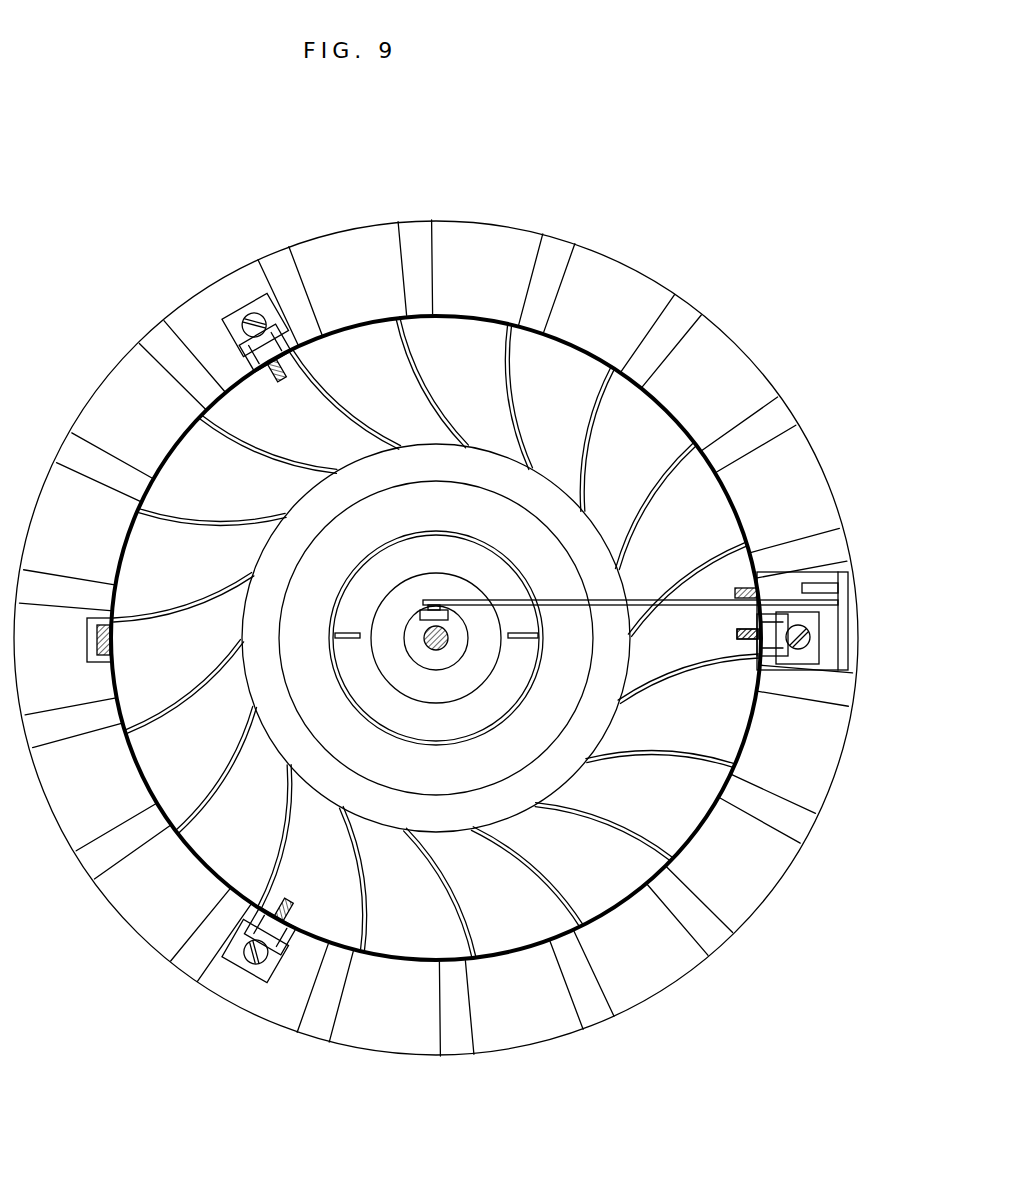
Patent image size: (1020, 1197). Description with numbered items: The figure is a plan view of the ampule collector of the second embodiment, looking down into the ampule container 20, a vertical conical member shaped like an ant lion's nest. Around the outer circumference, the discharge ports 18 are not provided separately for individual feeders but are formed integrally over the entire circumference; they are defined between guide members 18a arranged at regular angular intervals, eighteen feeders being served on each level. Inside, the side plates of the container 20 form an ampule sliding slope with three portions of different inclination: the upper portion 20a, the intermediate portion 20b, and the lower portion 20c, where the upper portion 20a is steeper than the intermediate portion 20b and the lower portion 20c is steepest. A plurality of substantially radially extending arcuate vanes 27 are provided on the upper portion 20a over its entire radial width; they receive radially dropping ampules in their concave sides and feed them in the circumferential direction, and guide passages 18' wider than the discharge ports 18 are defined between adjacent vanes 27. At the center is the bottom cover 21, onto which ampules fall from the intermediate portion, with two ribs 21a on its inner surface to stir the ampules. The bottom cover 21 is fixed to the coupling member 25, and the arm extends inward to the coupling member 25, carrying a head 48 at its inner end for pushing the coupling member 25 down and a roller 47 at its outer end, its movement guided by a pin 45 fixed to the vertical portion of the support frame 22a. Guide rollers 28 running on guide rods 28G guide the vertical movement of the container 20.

The discharge port 18 is at (436, 598).
The guide member 18a is at (345, 245).
The guide passage 18' is at (259, 407).
The ampule container 20 is at (768, 1028).
The upper portion 20a is at (620, 880).
The intermediate portion 20b is at (507, 800).
The lower portion 20c is at (460, 773).
The bottom cover 21 is at (452, 553).
The rib 21a is at (335, 628).
The support frame 22a is at (740, 590).
The coupling member 25 is at (403, 655).
The arcuate guide vane 27 is at (497, 350).
The guide roller 28 is at (820, 680).
The guide rod 28G is at (796, 625).
The pin 45 is at (745, 612).
The roller 47 is at (833, 583).
The head 48 is at (420, 610).